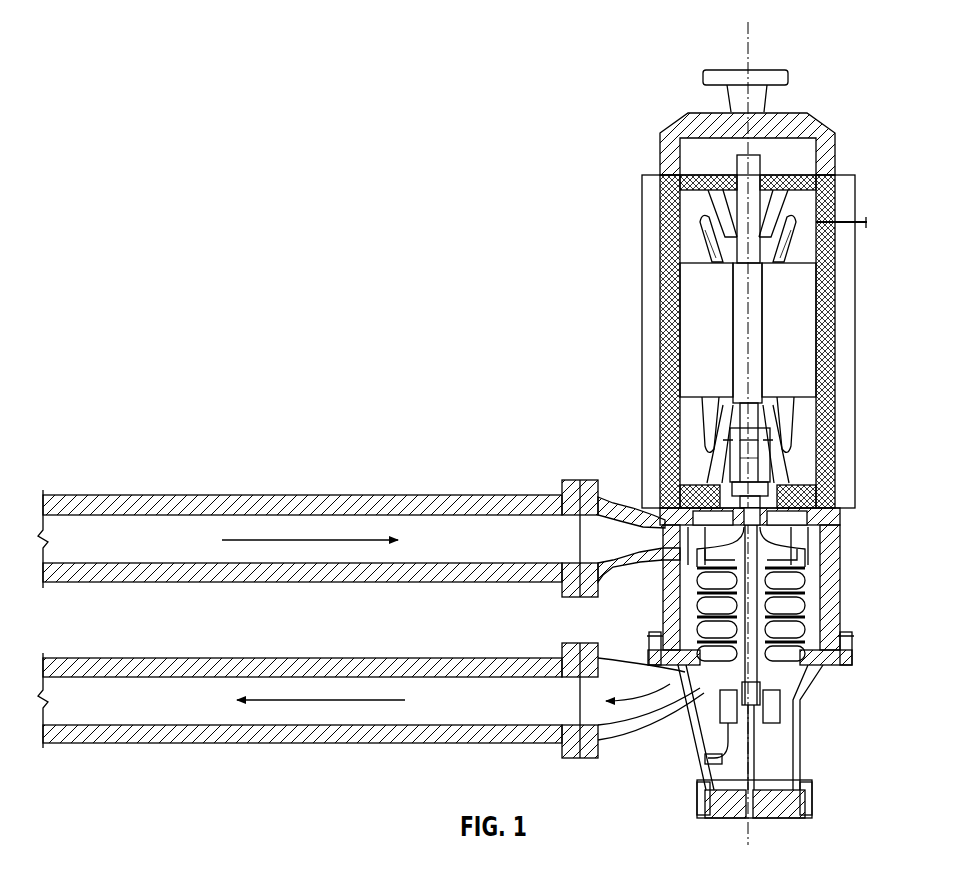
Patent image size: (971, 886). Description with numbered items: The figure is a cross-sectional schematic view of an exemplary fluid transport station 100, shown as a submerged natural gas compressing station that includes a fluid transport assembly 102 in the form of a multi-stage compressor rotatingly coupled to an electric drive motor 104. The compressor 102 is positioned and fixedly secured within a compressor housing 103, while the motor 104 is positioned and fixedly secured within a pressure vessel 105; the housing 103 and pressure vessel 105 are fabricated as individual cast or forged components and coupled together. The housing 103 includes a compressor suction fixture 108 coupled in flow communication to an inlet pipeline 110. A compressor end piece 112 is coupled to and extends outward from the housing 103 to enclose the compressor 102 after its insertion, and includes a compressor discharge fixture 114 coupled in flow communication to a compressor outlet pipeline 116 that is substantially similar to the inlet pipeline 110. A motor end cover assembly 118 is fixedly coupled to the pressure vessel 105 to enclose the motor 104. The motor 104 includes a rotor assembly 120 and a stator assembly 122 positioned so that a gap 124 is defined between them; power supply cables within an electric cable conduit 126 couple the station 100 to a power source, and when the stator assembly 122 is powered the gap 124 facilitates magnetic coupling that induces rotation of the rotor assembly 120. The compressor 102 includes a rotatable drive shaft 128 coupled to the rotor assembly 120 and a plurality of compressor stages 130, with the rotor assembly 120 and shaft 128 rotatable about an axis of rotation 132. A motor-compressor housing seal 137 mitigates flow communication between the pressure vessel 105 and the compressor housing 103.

The fluid transport station 100 is at (118, 104).
The fluid transport assembly 102 is at (867, 504).
The compressor housing 103 is at (830, 623).
The electric drive motor 104 is at (874, 156).
The pressure vessel 105 is at (855, 378).
The compressor suction fixture 108 is at (595, 480).
The inlet pipeline 110 is at (395, 494).
The compressor end piece 112 is at (848, 666).
The compressor discharge fixture 114 is at (641, 722).
The compressor outlet pipeline 116 is at (380, 744).
The motor end cover assembly 118 is at (829, 130).
The rotor assembly 120 is at (754, 325).
The stator assembly 122 is at (805, 347).
The gap 124 is at (765, 347).
The electric cable conduit 126 is at (856, 226).
The rotatable drive shaft 128 is at (796, 550).
The compressor stages 130 is at (793, 605).
The axis of rotation 132 is at (749, 36).
The motor-compressor housing seal 137 is at (772, 481).